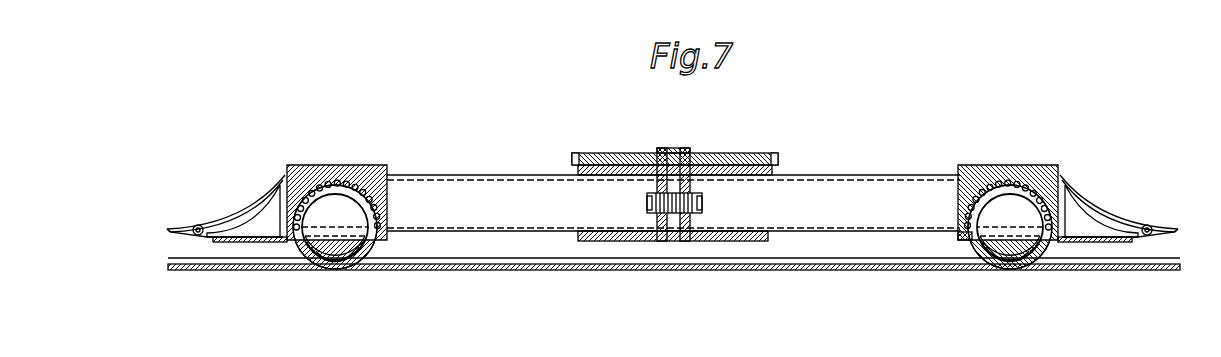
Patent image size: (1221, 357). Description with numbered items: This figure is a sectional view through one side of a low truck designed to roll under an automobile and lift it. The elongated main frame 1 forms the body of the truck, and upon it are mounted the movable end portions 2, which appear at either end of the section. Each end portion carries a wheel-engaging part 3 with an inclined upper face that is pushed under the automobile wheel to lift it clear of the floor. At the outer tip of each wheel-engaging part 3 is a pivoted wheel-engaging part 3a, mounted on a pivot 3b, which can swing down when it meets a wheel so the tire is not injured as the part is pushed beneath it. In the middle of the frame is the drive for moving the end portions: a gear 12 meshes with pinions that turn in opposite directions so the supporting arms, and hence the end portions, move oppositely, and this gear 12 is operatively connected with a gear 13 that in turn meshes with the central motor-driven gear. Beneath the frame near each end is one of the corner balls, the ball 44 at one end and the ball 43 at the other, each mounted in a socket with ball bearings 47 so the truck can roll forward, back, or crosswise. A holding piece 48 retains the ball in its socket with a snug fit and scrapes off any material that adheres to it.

The main frame 1 is at (760, 240).
The movable end portions 2 is at (253, 243).
The wheel-engaging parts 3 is at (208, 214).
The pivoted wheel-engaging parts 3a is at (195, 226).
The pivot 3b is at (174, 226).
The gear 12 is at (703, 203).
The gears 13 is at (727, 155).
The ball 43 is at (1013, 254).
The ball 44 is at (340, 254).
The ball bearings 47 is at (348, 180).
The holding pieces 48 is at (965, 243).